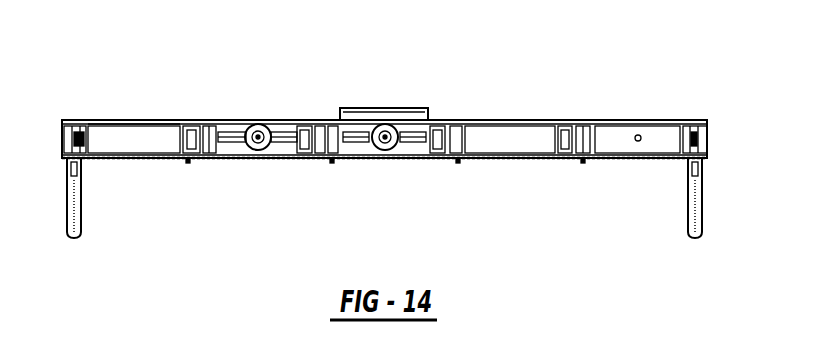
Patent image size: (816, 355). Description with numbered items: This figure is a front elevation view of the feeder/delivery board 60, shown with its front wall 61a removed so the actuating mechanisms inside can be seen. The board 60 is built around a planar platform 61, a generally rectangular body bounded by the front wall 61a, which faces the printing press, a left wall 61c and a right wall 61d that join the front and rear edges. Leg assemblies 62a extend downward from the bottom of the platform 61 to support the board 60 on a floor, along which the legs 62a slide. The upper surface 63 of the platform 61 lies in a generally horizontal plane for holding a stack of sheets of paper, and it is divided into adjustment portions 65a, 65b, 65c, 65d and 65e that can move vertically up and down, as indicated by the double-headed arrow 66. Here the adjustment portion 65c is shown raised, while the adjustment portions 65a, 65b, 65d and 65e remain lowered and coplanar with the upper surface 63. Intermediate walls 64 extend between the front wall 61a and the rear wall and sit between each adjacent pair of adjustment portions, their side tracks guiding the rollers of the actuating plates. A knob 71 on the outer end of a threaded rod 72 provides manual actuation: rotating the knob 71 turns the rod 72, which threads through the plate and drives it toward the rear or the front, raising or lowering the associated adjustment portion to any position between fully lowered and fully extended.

The feeder/delivery board 60 is at (650, 82).
The planar platform 61 is at (668, 118).
The front wall 61a is at (560, 160).
The left wall 61c is at (62, 126).
The right wall 61d is at (711, 157).
The leg assemblies 62a is at (82, 205).
The upper surface 63 is at (143, 120).
The intermediate walls 64 is at (187, 162).
The adjustment portion 65a is at (680, 120).
The adjustment portion 65b is at (520, 120).
The adjustment portion 65c is at (390, 108).
The adjustment portion 65d is at (255, 120).
The adjustment portion 65e is at (112, 120).
The double-headed arrow 66 is at (447, 92).
The knob 71 is at (276, 118).
The threaded rod 72 is at (252, 163).